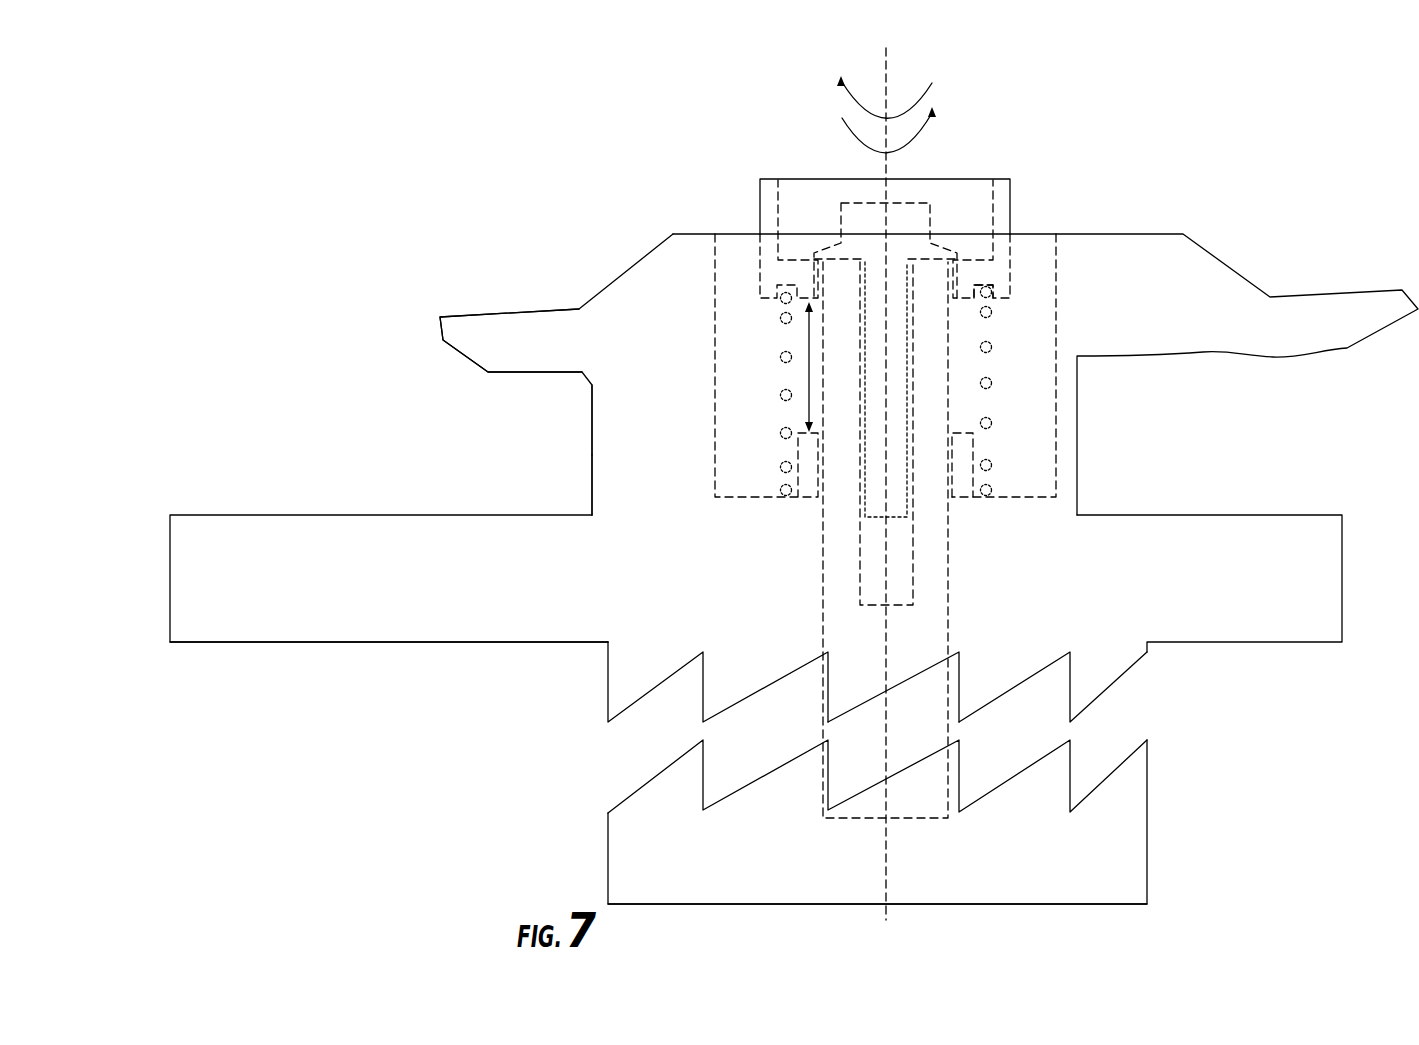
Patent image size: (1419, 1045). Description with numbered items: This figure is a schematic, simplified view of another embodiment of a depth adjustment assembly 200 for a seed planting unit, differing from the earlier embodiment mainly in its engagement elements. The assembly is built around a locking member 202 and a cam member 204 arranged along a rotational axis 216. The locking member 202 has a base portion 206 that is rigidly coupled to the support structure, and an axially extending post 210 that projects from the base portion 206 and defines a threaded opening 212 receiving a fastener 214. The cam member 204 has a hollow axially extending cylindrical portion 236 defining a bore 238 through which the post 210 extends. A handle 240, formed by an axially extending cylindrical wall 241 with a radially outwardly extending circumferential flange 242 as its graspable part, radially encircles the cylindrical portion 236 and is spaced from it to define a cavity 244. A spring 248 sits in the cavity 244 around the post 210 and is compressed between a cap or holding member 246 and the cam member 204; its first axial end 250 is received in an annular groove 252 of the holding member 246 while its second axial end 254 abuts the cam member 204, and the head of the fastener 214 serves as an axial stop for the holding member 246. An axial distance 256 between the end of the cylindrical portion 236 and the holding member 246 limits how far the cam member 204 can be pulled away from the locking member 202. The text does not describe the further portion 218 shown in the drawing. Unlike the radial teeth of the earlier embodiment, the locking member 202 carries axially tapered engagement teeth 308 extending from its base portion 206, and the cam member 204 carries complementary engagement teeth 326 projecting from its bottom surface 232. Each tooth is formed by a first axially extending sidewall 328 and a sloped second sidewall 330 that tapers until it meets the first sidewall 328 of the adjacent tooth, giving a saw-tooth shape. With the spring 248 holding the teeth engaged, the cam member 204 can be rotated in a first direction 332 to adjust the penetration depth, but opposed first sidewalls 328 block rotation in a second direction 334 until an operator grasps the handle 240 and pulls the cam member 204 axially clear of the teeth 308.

The depth adjustment assembly 200 is at (1130, 145).
The locking member 202 is at (1160, 848).
The cam member 204 is at (1355, 600).
The base portion 206 is at (1070, 902).
The axially extending post 210 is at (918, 688).
The threaded opening 212 is at (913, 558).
The fastener 214 is at (915, 228).
The rotational axis 216 is at (886, 75).
The flange 218 is at (168, 577).
The bottom surface 232 is at (322, 643).
The axially extending cylindrical portion 236 is at (973, 453).
The bore 238 is at (952, 488).
The handle 240 is at (570, 436).
The axially extending cylindrical wall 241 is at (592, 455).
The radially outwardly extending circumferential flange 242 is at (488, 330).
The cavity 244 is at (728, 383).
The holding member 246 is at (1000, 190).
The spring 248 is at (1010, 380).
The first axial end 250 is at (990, 293).
The annular groove 252 is at (984, 283).
The second axial end 254 is at (990, 490).
The axial distance 256 is at (809, 330).
The engagement teeth 308 is at (790, 773).
The engagement teeth 326 is at (1043, 655).
The first axially extending sidewall 328 is at (1070, 757).
The second sidewall 330 is at (793, 757).
The first direction 332 is at (857, 108).
The second direction 334 is at (916, 145).